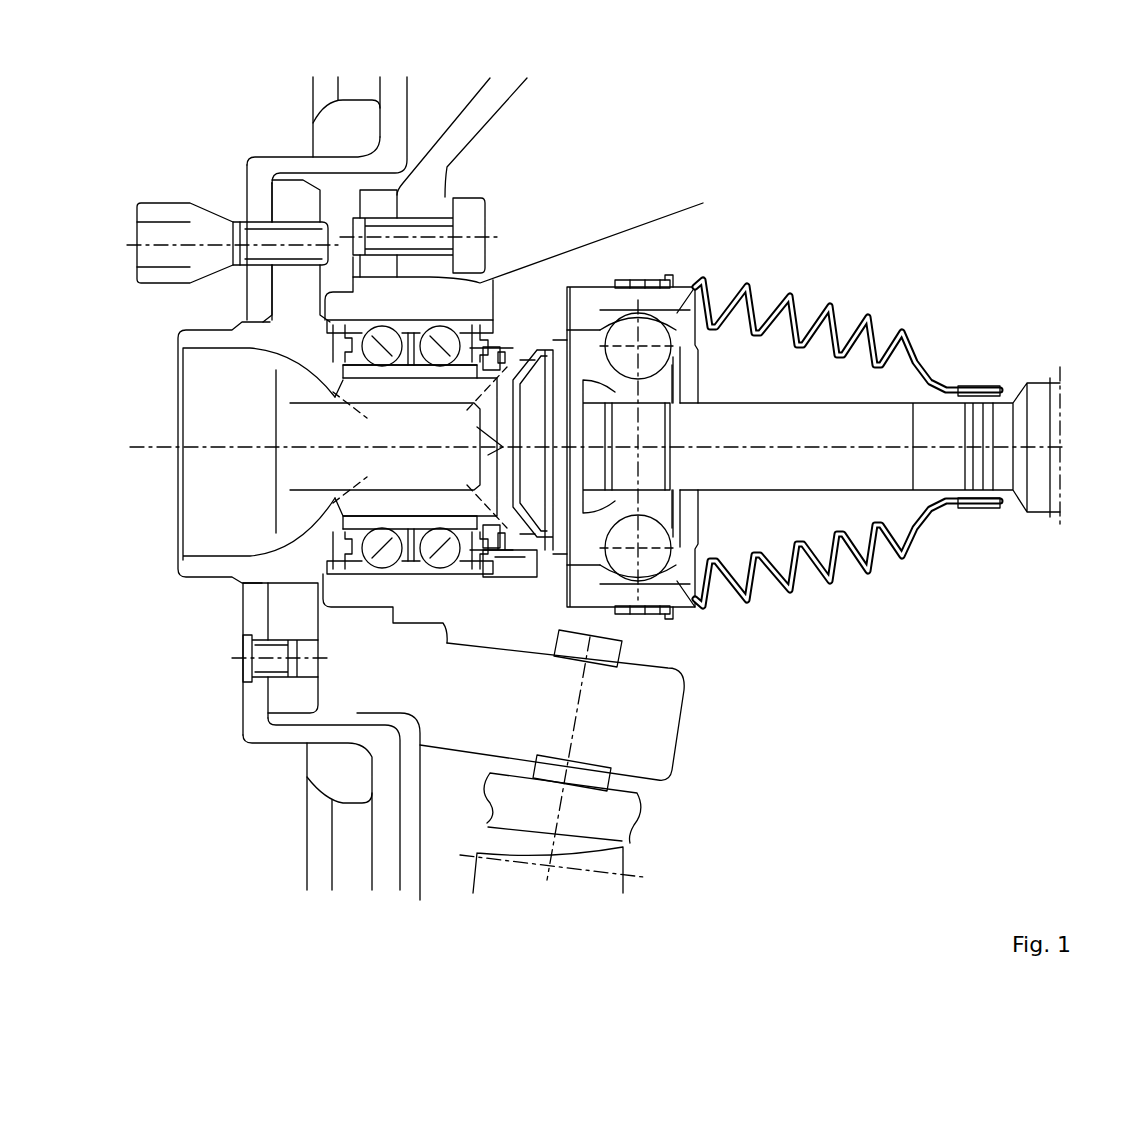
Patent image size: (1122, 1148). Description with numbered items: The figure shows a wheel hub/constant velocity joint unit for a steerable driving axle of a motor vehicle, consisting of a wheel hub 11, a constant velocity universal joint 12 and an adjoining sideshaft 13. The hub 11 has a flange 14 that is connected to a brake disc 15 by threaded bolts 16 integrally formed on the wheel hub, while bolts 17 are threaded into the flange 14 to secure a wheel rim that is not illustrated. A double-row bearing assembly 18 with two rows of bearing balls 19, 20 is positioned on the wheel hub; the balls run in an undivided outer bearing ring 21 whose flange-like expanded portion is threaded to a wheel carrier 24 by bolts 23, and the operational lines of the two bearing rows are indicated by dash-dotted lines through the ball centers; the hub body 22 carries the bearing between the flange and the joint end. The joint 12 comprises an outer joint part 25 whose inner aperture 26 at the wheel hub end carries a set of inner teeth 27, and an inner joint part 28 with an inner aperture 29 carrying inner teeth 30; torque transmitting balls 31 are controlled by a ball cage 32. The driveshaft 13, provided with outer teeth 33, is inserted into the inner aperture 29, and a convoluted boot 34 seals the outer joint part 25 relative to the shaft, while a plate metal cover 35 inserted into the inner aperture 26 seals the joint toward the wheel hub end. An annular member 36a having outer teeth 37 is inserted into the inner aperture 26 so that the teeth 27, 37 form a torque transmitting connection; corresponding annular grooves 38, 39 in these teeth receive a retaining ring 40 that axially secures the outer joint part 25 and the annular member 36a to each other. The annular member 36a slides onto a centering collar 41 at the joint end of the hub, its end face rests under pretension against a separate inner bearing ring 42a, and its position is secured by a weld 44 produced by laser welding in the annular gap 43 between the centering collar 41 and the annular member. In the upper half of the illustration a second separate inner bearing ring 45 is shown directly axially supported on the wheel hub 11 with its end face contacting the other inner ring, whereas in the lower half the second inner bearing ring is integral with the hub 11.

The wheel hub 11 is at (333, 520).
The constant velocity universal joint 12 is at (686, 637).
The sideshaft 13 is at (1028, 482).
The flange 14 is at (253, 717).
The brake disc 15 is at (312, 825).
The threaded bolts 16 is at (267, 668).
The bolts 17 is at (218, 230).
The double-row bearing assembly 18 is at (420, 644).
The bearing balls 19 is at (440, 537).
The bearing balls 20 is at (378, 537).
The outer bearing ring 21 is at (380, 600).
The hub flange 22 is at (288, 700).
The bolts 23 is at (468, 203).
The wheel carrier 24 is at (462, 140).
The outer joint part 25 is at (700, 613).
The inner aperture 26 is at (401, 446).
The inner teeth 27 is at (523, 570).
The inner joint part 28 is at (775, 590).
The inner aperture 29 is at (635, 446).
The inner teeth 30 is at (700, 500).
The torque transmitting balls 31 is at (640, 322).
The ball cage 32 is at (680, 335).
The outer teeth 33 is at (645, 380).
The convoluted boot 34 is at (645, 365).
The plate metal cover 35 is at (587, 347).
The annular member 36a is at (567, 343).
The outer teeth 37 is at (547, 350).
The annular groove 38 is at (513, 557).
The annular groove 39 is at (505, 347).
The retaining ring 40 is at (513, 345).
The centering collar 41 is at (432, 370).
The inner bearing ring 42a is at (380, 370).
The annular gap 43 is at (403, 370).
The weld 44 is at (477, 370).
The second separate inner bearing ring 45 is at (350, 380).